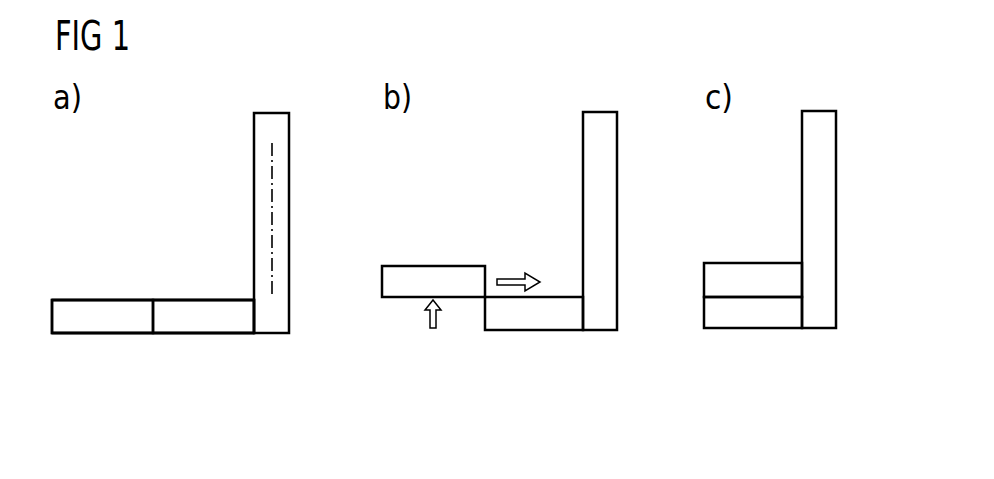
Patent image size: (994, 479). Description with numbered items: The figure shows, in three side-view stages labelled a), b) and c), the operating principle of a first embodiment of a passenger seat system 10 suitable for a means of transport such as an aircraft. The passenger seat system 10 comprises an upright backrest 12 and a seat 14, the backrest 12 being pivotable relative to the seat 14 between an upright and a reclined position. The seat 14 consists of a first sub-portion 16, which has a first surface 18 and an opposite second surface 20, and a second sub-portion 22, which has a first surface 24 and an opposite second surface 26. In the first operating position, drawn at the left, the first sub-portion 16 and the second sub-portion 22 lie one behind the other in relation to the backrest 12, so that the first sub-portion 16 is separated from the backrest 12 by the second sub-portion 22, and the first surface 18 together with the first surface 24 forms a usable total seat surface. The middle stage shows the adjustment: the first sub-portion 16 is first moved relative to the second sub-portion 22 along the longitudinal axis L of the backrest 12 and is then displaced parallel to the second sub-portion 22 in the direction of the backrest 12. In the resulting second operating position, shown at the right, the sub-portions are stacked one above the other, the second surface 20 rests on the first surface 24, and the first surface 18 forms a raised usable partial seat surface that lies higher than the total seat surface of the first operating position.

The passenger seat system 10 is at (190, 195).
The backrest 12 is at (263, 128).
The seat 14 is at (145, 245).
The first sub-portion 16 is at (130, 309).
The first surface 18 is at (97, 300).
The second surface 20 is at (103, 333).
The second sub-portion 22 is at (234, 309).
The first surface 24 is at (197, 300).
The second surface 26 is at (203, 335).
The longitudinal axis L is at (282, 208).